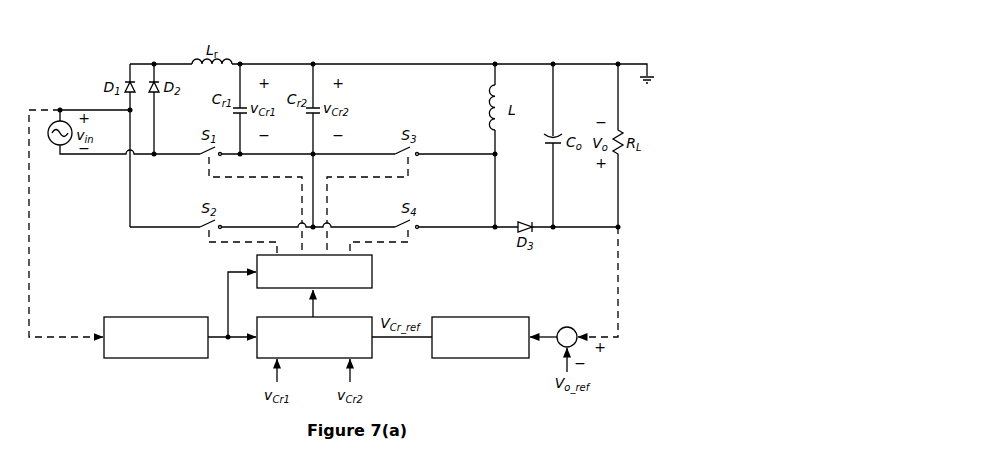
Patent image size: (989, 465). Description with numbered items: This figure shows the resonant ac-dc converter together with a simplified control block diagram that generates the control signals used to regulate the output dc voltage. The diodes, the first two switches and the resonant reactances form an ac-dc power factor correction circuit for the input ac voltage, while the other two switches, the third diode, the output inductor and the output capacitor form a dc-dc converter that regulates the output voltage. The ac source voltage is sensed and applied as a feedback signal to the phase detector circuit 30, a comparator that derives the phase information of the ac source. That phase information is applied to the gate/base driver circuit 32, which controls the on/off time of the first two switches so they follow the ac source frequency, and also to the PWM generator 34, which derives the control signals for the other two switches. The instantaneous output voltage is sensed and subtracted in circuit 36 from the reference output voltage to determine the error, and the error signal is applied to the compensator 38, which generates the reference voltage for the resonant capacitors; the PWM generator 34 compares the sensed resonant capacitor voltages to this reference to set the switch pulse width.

The phase detector circuit 30 is at (152, 360).
The gate/base driver circuit 32 is at (374, 273).
The pulse-width modulation (PWM) generator 34 is at (255, 359).
The subtracting circuit 36 is at (561, 324).
The compensator 38 is at (470, 359).